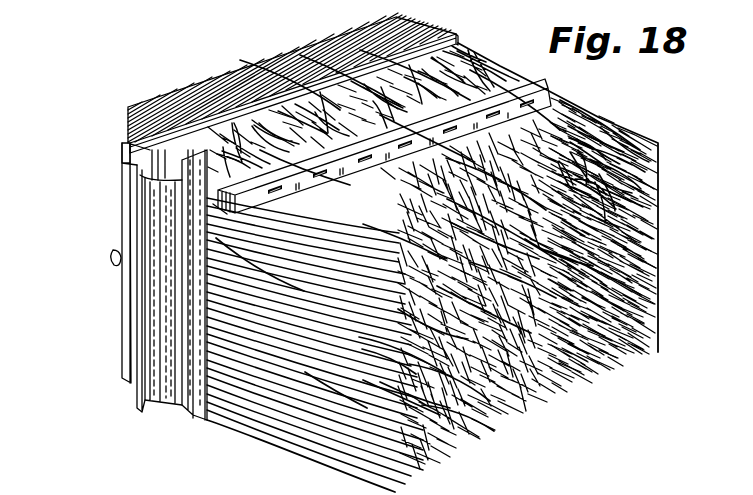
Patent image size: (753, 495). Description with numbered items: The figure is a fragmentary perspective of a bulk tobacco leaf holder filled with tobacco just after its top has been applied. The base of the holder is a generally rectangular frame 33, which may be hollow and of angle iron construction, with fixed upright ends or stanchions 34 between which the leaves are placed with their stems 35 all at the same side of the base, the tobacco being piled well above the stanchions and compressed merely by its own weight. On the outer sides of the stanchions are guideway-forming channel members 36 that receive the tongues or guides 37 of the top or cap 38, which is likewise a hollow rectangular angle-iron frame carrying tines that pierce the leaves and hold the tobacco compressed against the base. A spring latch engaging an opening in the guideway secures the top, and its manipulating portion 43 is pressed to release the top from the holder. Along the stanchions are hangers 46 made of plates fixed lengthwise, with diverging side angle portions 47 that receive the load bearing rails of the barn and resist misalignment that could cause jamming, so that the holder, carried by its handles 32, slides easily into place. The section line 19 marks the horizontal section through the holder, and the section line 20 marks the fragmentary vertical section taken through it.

The section line 19— 19 is at (102, 158).
The section line 20— 20 is at (157, 113).
The handles 32 is at (110, 256).
The rectangular frame 33 is at (238, 441).
The upright ends or stanchions 34 is at (198, 414).
The stems 35 is at (167, 97).
The guideway-forming channel members 36 is at (120, 203).
The tongues or guides 37 is at (127, 155).
The top or cap 38 is at (533, 78).
The manipulating portion 43 is at (127, 143).
The hangers 46 is at (165, 405).
The diverging side angle portions 47 is at (138, 283).